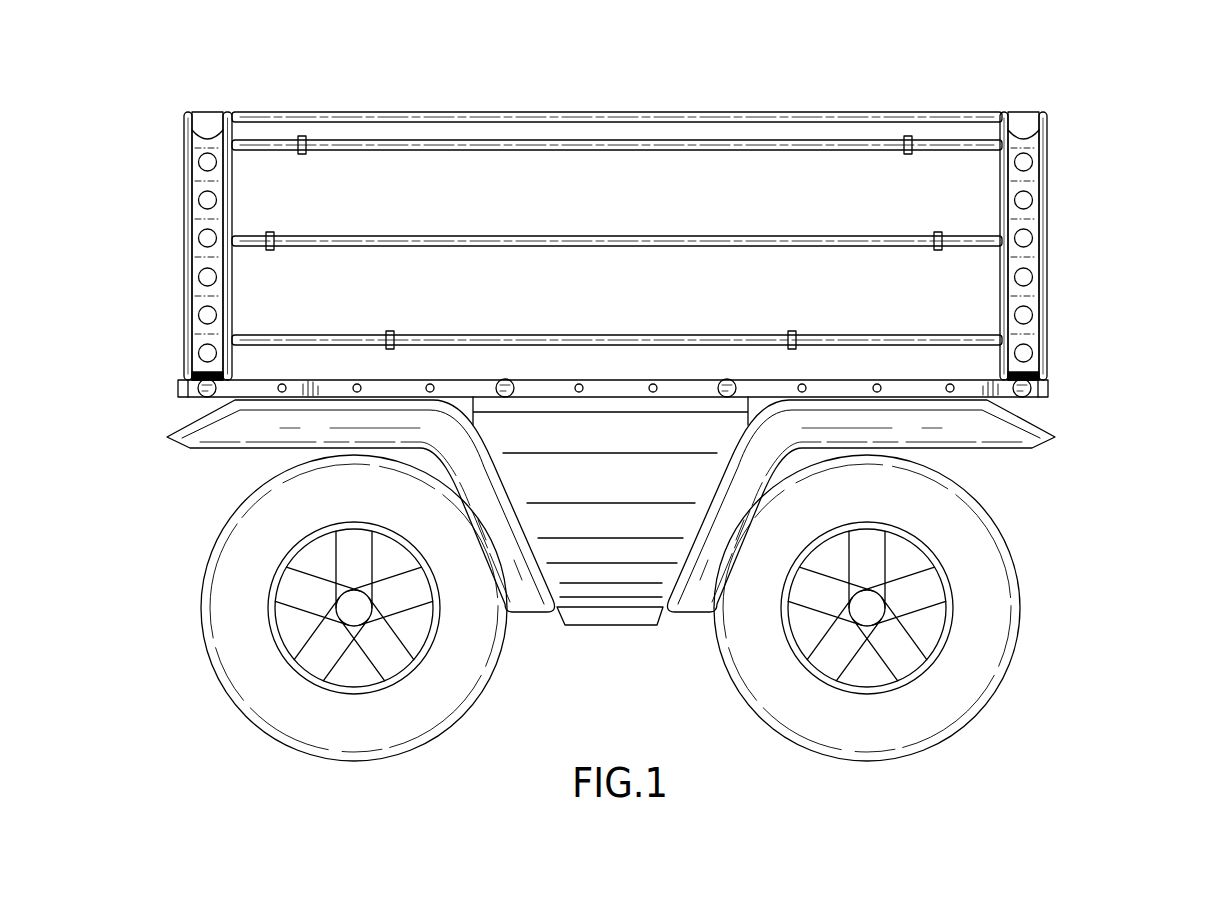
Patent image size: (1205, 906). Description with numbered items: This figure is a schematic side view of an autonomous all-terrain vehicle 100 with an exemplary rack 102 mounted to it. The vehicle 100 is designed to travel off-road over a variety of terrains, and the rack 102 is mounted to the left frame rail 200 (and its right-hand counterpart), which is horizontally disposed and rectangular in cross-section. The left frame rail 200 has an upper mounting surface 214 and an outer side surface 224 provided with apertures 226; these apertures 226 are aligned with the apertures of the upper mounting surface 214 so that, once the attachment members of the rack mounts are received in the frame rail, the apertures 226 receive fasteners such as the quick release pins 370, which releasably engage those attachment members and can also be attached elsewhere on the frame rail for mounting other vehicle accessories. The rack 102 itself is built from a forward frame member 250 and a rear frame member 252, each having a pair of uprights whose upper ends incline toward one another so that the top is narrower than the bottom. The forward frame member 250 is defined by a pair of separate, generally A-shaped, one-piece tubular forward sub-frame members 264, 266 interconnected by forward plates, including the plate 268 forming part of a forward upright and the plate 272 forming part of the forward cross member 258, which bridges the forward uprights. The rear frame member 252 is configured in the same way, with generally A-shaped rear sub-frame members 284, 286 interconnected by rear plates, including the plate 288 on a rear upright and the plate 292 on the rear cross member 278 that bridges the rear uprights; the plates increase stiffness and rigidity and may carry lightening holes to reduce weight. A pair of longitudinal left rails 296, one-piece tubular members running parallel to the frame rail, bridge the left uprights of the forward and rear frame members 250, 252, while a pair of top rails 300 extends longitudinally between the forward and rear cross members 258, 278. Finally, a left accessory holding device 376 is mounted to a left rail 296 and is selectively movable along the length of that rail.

The autonomous all-terrain vehicle 100 is at (165, 530).
The rack 102 is at (640, 234).
The left frame rail 200 is at (617, 362).
The upper mounting surface 214 is at (895, 380).
The outer side surface 224 is at (550, 385).
The apertures 226 is at (430, 384).
The forward frame member 250 is at (210, 209).
The rear frame member 252 is at (1025, 209).
The forward cross member 258 is at (228, 112).
The forward sub-frame member 264 is at (185, 180).
The forward sub-frame member 266 is at (233, 190).
The forward plate 268 is at (200, 223).
The forward plate 272 is at (212, 112).
The rear cross member 278 is at (1005, 112).
The rear sub-frame member 284 is at (1047, 325).
The rear sub-frame member 286 is at (1000, 195).
The rear plate 288 is at (1047, 250).
The rear plate 292 is at (1022, 112).
The left rail 296 is at (620, 236).
The top rail 300 is at (541, 112).
The quick release pin 370 is at (200, 390).
The left accessory holding device 376 is at (275, 250).